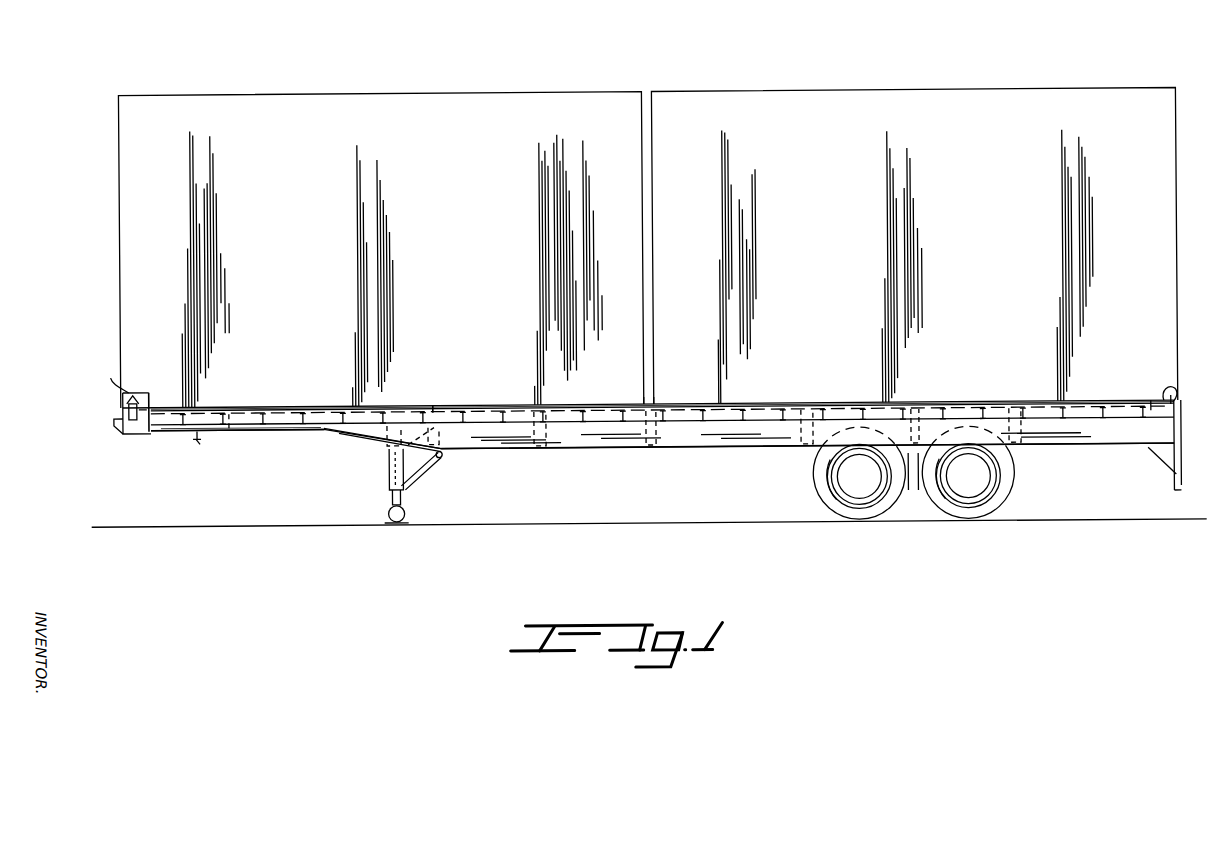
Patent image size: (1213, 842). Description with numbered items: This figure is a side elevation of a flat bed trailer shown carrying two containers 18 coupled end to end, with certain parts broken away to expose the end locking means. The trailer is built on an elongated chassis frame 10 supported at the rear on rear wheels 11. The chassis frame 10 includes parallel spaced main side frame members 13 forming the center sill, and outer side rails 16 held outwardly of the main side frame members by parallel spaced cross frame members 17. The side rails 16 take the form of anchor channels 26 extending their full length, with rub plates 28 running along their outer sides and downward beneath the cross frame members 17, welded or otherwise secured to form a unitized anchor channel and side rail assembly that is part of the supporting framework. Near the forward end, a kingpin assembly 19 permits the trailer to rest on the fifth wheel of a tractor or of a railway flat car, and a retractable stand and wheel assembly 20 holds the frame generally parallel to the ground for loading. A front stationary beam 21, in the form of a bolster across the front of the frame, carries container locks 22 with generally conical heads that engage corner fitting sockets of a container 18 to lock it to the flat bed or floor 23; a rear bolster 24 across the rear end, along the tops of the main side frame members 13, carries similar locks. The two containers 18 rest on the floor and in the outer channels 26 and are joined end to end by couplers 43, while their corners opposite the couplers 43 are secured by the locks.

The chassis frame 10 is at (525, 449).
The rear wheels 11 is at (943, 502).
The main side frame members 13 is at (590, 433).
The outer side rails 16 is at (283, 420).
The cross frame members 17 is at (232, 418).
The containers 18 is at (598, 92).
The kingpin assembly 19 is at (198, 438).
The retractable stand and wheel assembly 20 is at (388, 467).
The front stationary beam 21 is at (118, 406).
The container locks 22 is at (110, 374).
The flat bed or floor 23 is at (1170, 394).
The rear bolster 24 is at (1153, 408).
The anchor channels 26 is at (293, 404).
The rub plates 28 is at (318, 420).
The couplers 43 is at (650, 402).